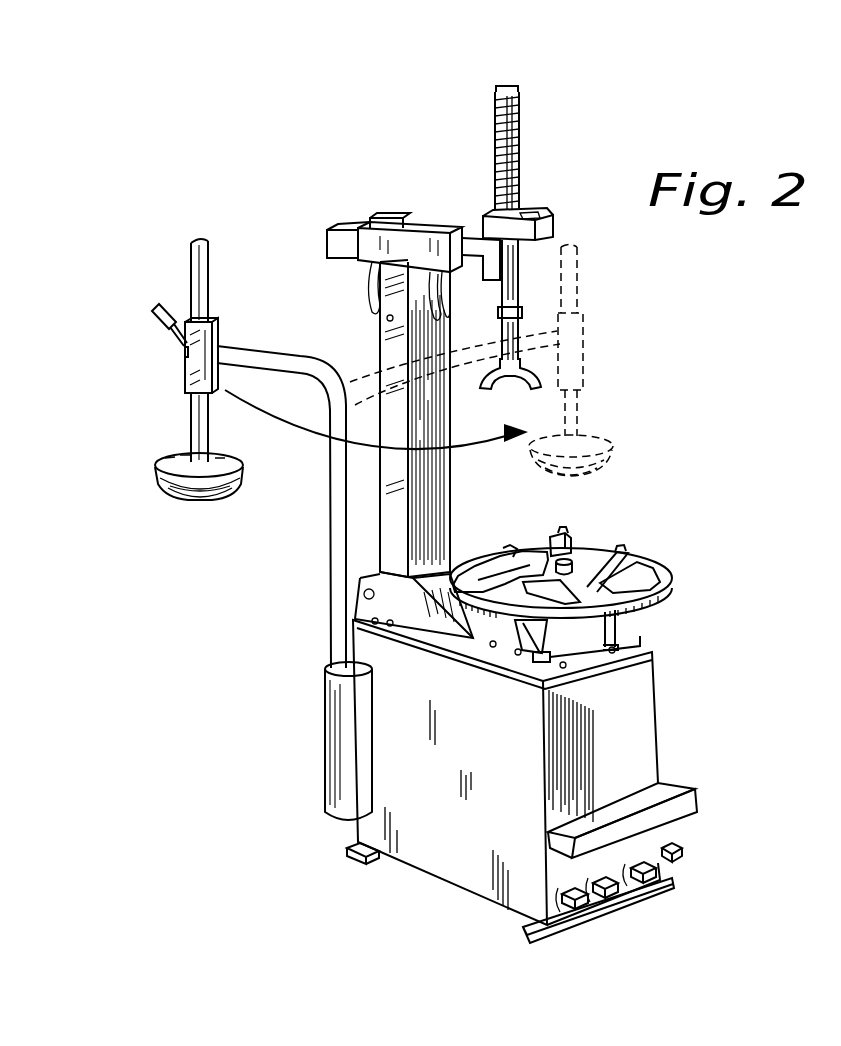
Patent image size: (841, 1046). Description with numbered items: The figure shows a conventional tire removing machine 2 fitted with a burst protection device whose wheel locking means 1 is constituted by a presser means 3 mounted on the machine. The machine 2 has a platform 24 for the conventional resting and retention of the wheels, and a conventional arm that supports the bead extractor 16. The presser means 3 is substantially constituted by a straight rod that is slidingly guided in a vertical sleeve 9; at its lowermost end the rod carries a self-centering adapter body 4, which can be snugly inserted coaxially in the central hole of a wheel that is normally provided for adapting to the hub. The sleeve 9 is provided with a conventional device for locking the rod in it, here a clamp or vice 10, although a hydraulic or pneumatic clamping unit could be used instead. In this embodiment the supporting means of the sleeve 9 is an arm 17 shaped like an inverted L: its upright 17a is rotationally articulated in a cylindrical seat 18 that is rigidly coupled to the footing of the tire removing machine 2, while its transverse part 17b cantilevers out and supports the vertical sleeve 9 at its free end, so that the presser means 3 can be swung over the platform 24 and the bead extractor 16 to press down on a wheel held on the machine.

The wheel locking means 1 is at (241, 304).
The tire removing machine 2 is at (642, 735).
The presser means 3 is at (184, 479).
The self-centering adapter body 4 is at (235, 505).
The vertical sleeve 9 is at (213, 342).
The clamp 10 is at (157, 328).
The bead extractor 16 is at (493, 392).
The arm 17 is at (388, 507).
The upright 17a is at (337, 612).
The transverse part 17b is at (288, 360).
The cylindrical seat 18 is at (363, 758).
The platform 24 is at (657, 582).